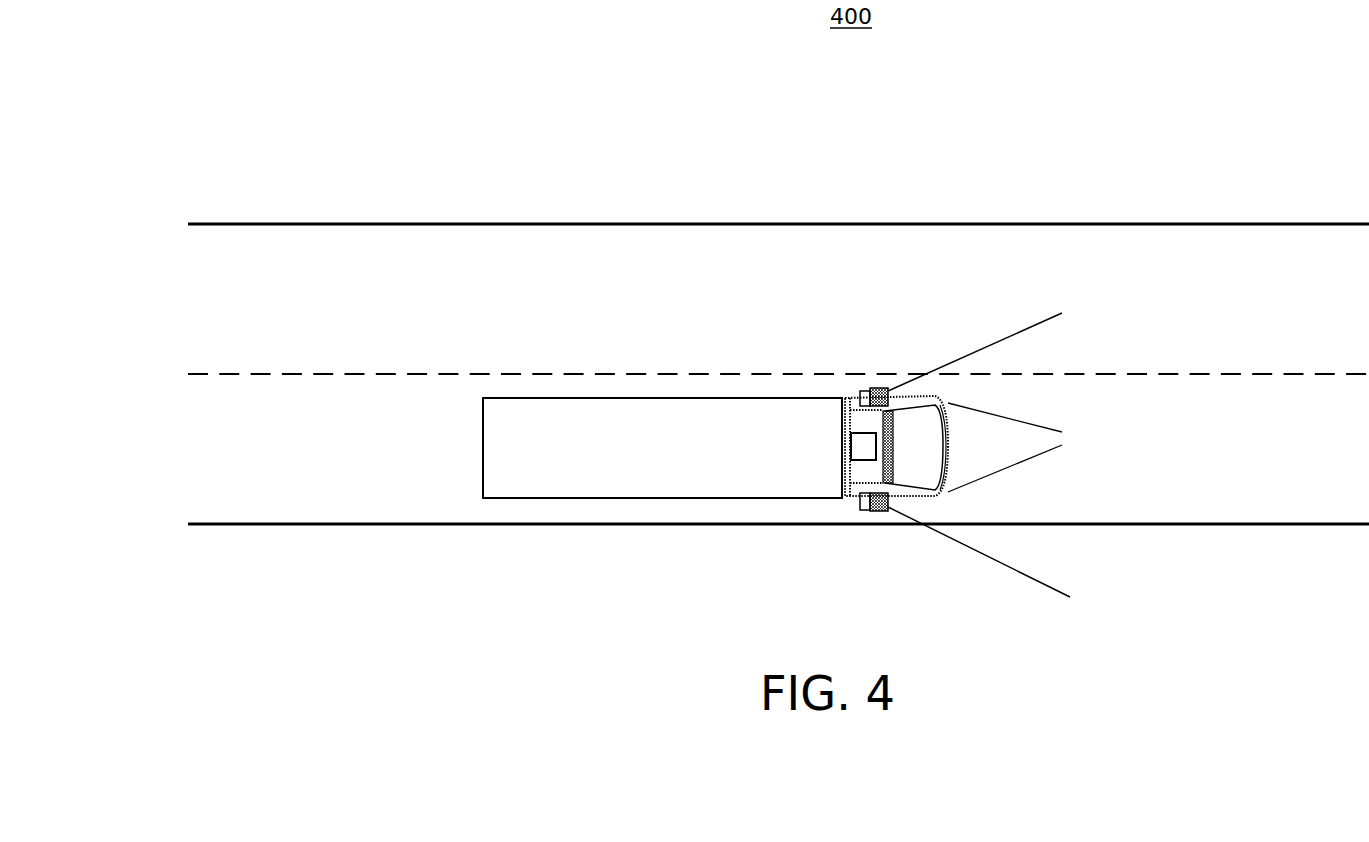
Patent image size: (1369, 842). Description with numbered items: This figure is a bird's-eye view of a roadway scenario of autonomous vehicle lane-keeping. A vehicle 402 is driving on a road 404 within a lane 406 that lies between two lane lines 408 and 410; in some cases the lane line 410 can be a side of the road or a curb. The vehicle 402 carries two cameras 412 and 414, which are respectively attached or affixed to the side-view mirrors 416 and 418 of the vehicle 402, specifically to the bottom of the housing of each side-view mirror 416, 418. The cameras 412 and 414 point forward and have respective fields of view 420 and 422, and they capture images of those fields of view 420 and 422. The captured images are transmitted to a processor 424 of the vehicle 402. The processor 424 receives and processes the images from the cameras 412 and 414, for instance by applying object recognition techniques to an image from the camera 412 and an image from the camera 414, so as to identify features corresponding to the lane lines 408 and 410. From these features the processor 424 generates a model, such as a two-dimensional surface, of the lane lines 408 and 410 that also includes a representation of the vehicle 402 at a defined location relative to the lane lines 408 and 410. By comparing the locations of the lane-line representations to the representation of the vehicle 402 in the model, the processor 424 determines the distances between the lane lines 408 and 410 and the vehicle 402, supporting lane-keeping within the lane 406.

The vehicle 402 is at (578, 397).
The road 404 is at (235, 222).
The lane 406 is at (238, 470).
The lane line 408 is at (295, 373).
The lane line 410 is at (293, 525).
The camera 412 is at (879, 388).
The camera 414 is at (879, 512).
The side-view mirror 416 is at (864, 390).
The side-view mirror 418 is at (865, 512).
The field of view 420 is at (1052, 313).
The field of view 422 is at (1048, 588).
The processor 424 is at (863, 433).